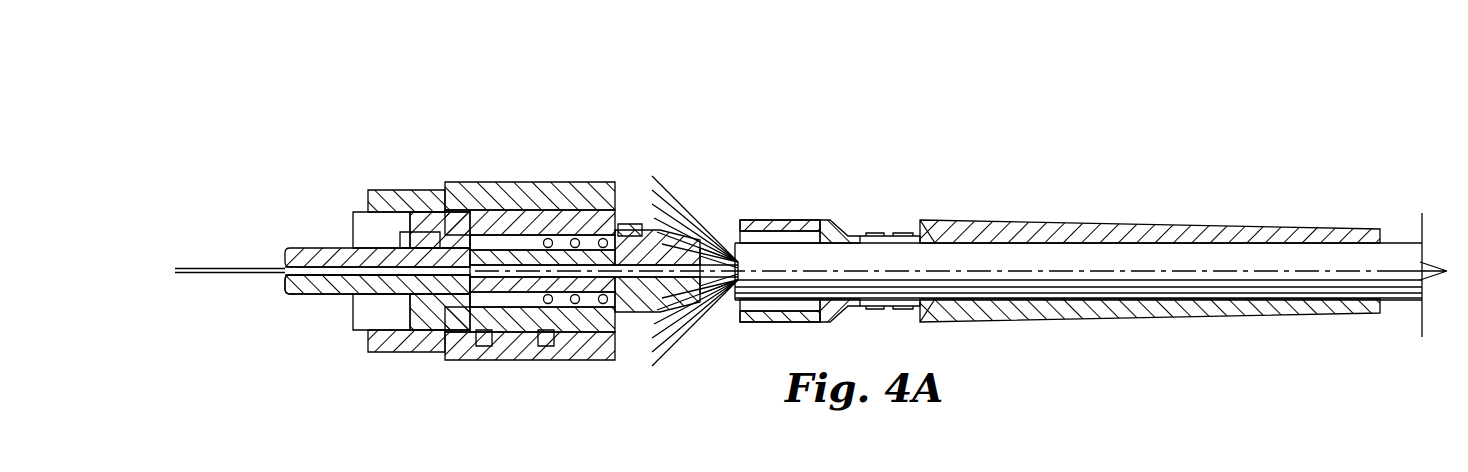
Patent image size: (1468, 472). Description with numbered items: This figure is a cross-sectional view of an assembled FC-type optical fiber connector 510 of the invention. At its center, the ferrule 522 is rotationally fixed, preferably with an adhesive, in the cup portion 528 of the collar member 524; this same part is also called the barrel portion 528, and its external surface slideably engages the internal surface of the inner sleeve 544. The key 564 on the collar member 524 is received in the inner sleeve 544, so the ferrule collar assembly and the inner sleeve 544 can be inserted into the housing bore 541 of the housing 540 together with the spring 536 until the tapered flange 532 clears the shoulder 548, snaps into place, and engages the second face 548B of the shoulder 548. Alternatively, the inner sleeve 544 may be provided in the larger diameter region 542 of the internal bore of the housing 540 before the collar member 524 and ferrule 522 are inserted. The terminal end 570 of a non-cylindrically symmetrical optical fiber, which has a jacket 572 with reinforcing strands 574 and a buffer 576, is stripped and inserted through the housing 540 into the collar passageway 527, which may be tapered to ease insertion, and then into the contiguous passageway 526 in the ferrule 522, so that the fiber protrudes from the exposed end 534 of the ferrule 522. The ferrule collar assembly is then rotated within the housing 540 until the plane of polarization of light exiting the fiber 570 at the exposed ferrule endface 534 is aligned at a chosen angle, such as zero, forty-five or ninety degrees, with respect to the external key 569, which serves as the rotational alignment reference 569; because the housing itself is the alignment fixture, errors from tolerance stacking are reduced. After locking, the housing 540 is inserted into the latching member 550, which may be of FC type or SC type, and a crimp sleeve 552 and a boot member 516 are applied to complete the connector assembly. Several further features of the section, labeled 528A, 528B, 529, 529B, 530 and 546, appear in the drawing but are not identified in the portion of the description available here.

The fluid delivery catheter assembly 510 is at (525, 72).
The boot member 516 is at (1200, 227).
The ferrule 522 is at (292, 250).
The collar member 524 is at (418, 353).
The passageway 526 is at (288, 292).
The collar passageway 527 is at (575, 304).
The cup portion 528 is at (462, 332).
The sleeve upper portion 528A is at (413, 232).
The sleeve lower portion 528B is at (483, 346).
The inner tube 529 is at (512, 308).
The inner tube lower portion 529B is at (545, 346).
The lower nozzle body 530 is at (624, 312).
The tapered flange 532 is at (663, 310).
The exposed end 534 is at (285, 280).
The spring 536 is at (545, 236).
The housing 540 is at (637, 226).
The housing bore 541 is at (353, 232).
The larger diameter region 542 is at (352, 312).
The inner sleeve 544 is at (588, 238).
The nozzle tip 546 is at (705, 245).
The shoulder 548 is at (622, 230).
The second face 548B is at (667, 317).
The latching member 550 is at (475, 183).
The crimp sleeve 552 is at (828, 228).
The key 564 is at (505, 210).
The external key 569 is at (393, 195).
The terminal end of optical fiber 570 is at (175, 268).
The jacket 572 is at (1393, 252).
The reinforcing strands 574 is at (672, 350).
The buffer 576 is at (684, 210).